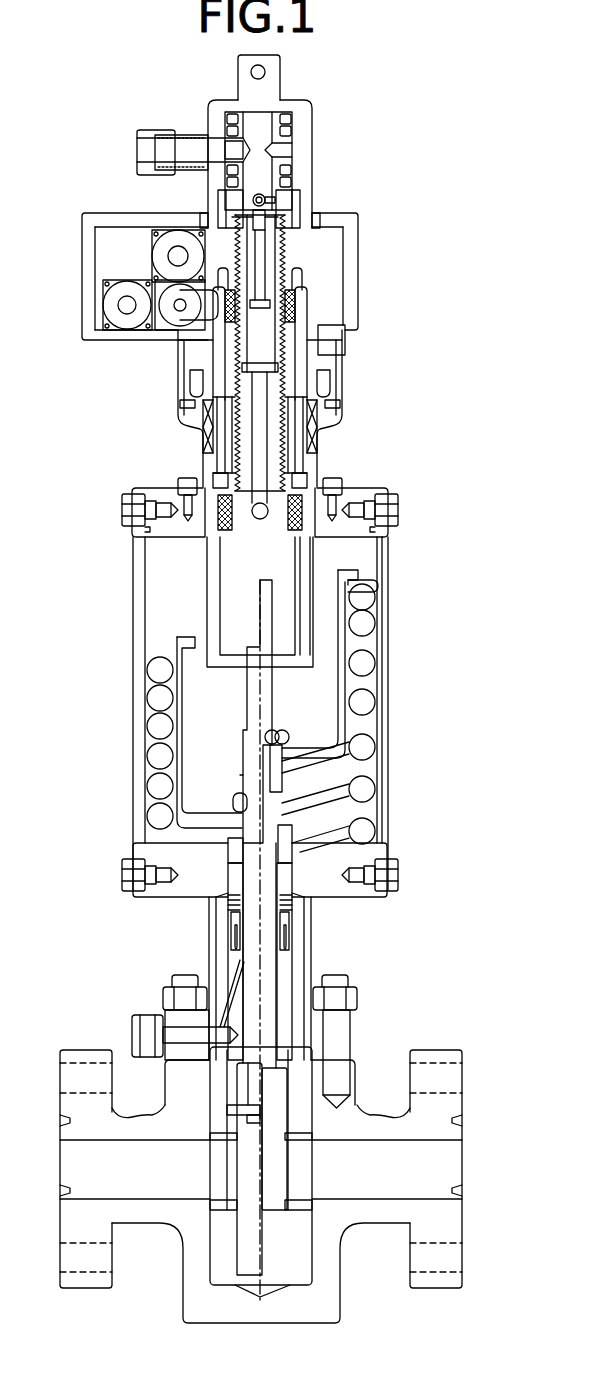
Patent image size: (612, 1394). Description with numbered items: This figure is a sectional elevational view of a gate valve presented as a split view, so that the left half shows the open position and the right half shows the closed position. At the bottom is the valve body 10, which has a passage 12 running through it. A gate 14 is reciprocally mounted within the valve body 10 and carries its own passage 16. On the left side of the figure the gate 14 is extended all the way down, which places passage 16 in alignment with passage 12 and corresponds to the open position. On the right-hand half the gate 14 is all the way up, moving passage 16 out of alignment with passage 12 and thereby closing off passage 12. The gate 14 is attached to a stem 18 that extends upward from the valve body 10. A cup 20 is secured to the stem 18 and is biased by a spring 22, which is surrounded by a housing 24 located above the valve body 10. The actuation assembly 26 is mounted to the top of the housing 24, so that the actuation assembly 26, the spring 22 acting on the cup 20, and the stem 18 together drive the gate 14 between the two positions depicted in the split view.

The valve body 10 is at (378, 1103).
The passage 12 is at (430, 1140).
The gate 14 is at (237, 1246).
The passage 16 is at (275, 1070).
The stem 18 is at (267, 923).
The cup 20 is at (340, 683).
The spring 22 is at (363, 697).
The housing 24 is at (398, 586).
The actuation assembly 26 is at (395, 340).